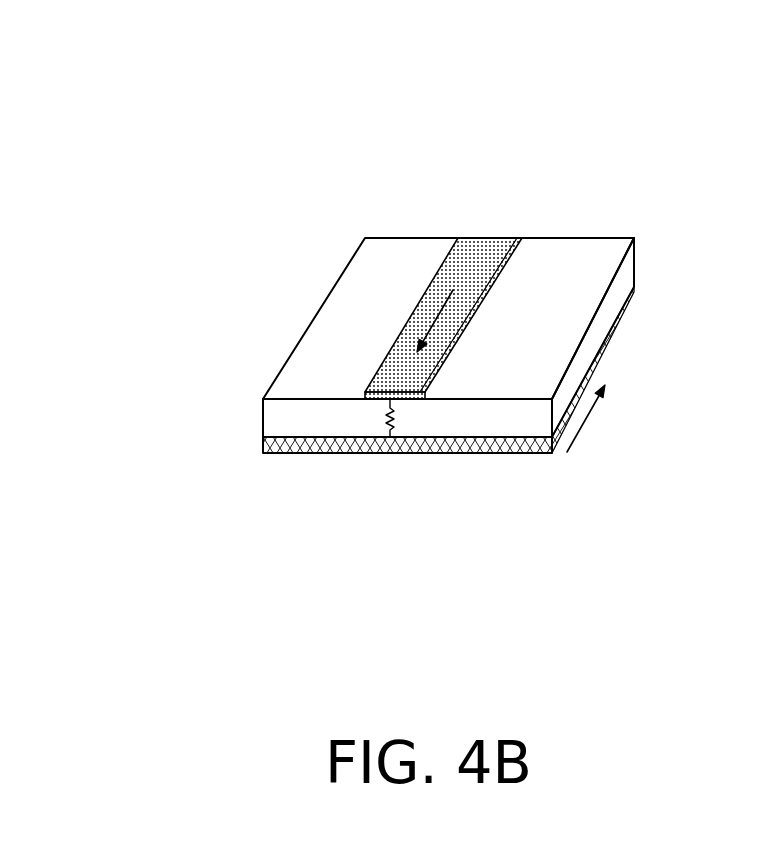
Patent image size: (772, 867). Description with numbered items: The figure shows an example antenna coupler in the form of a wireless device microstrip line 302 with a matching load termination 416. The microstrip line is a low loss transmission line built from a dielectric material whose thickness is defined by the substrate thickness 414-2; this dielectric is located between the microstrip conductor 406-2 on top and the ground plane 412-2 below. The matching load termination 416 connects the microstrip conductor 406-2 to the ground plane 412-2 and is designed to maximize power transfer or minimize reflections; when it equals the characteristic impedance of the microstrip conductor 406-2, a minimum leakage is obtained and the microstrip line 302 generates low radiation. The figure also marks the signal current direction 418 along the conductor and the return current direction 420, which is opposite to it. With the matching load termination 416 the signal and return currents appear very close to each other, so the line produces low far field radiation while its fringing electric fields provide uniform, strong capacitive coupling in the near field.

The wireless device microstrip line 302 is at (236, 68).
The microstrip conductor 406-2 is at (468, 245).
The signal current direction 418 is at (414, 306).
The substrate thickness 414-2 is at (258, 400).
The matching load termination 416 is at (368, 421).
The ground plane 412-2 is at (478, 464).
The return current direction 420 is at (624, 431).